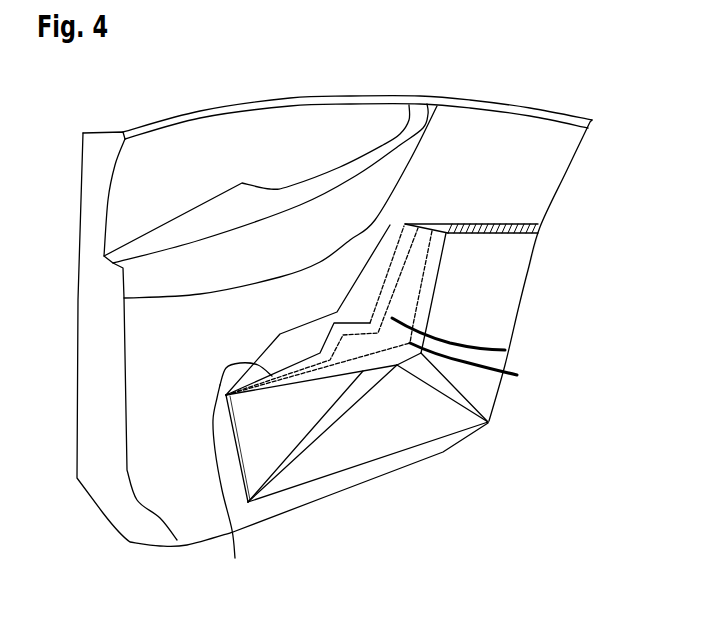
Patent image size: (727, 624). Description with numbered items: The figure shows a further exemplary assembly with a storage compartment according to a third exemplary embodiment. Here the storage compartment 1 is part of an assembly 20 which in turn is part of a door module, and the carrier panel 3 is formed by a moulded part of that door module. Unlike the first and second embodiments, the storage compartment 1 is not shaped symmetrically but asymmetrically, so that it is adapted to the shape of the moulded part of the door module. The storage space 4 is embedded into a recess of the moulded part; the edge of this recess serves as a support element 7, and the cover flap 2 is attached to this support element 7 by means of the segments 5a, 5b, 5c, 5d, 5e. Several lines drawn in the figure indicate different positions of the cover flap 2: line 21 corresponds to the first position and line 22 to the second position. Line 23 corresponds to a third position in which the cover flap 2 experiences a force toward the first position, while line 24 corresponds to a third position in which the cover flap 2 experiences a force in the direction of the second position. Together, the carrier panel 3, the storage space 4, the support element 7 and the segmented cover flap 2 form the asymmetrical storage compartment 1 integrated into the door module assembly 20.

The assembly 20 is at (168, 100).
The carrier panel 3 is at (553, 170).
The storage compartment 1 is at (542, 250).
The cover flap 2 is at (513, 293).
The line 22 is at (438, 278).
The storage space 4 is at (402, 236).
The line 23 is at (505, 350).
The line 24 is at (517, 375).
The segment 5a is at (311, 433).
The segment 5b is at (327, 425).
The segment 5c is at (368, 433).
The segment 5d is at (437, 380).
The segment 5e is at (407, 321).
The support element 7 is at (280, 335).
The line 21 is at (230, 492).